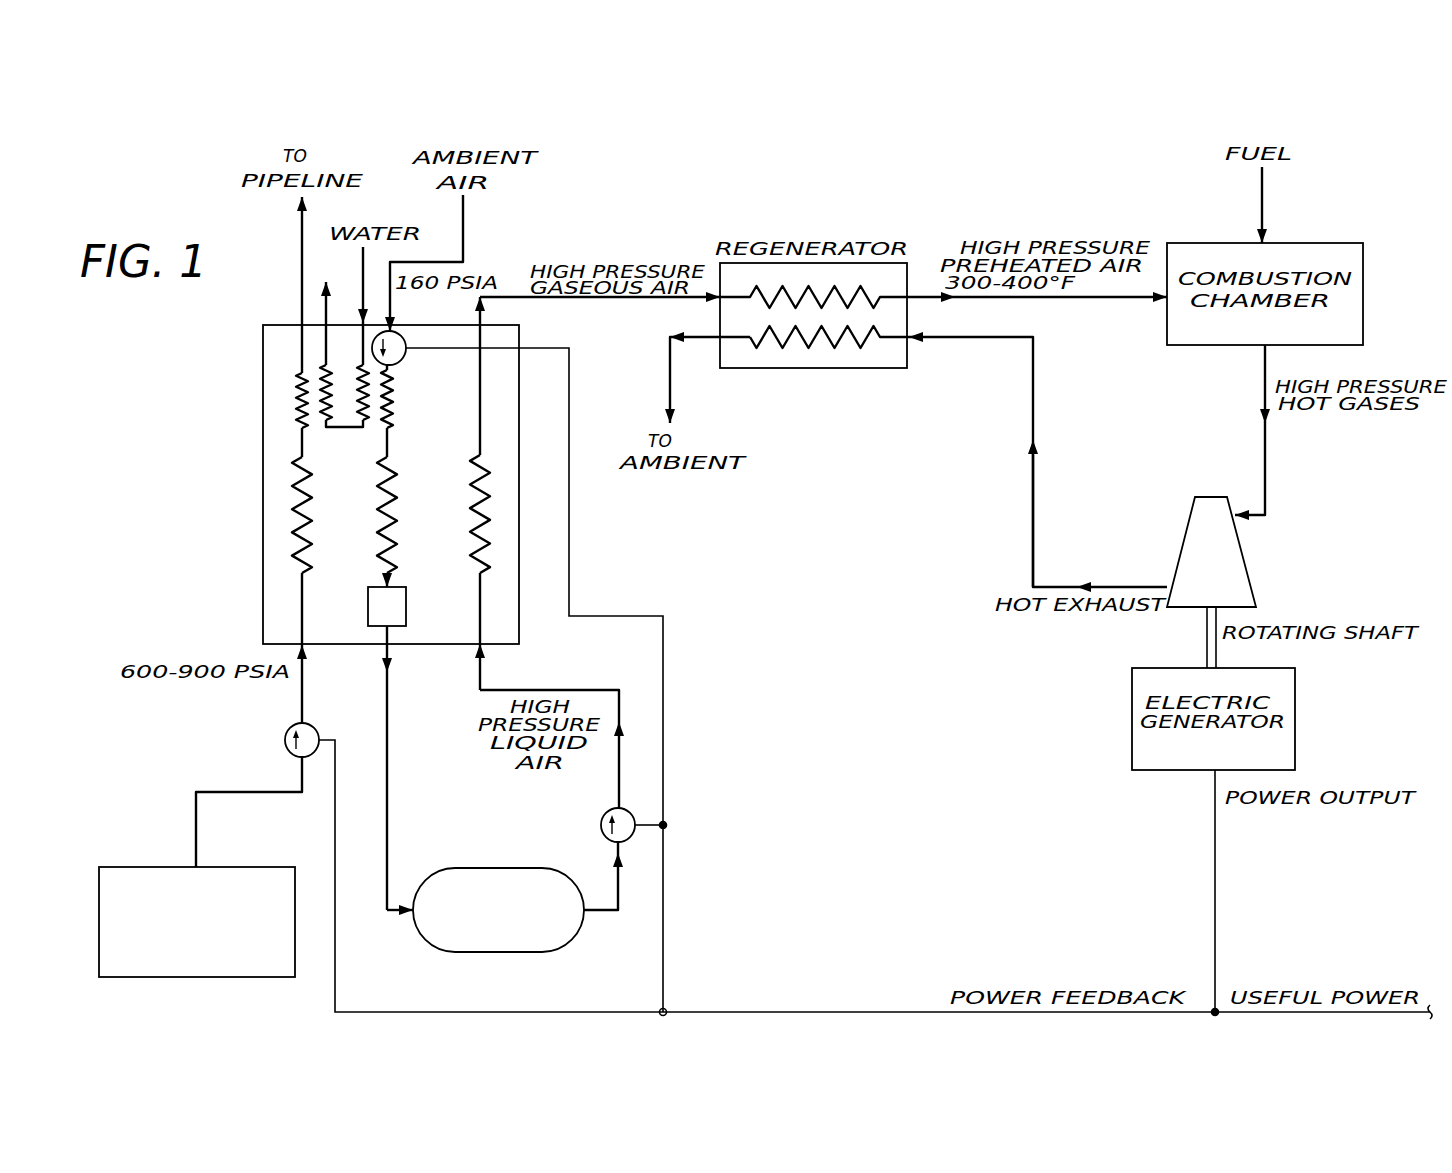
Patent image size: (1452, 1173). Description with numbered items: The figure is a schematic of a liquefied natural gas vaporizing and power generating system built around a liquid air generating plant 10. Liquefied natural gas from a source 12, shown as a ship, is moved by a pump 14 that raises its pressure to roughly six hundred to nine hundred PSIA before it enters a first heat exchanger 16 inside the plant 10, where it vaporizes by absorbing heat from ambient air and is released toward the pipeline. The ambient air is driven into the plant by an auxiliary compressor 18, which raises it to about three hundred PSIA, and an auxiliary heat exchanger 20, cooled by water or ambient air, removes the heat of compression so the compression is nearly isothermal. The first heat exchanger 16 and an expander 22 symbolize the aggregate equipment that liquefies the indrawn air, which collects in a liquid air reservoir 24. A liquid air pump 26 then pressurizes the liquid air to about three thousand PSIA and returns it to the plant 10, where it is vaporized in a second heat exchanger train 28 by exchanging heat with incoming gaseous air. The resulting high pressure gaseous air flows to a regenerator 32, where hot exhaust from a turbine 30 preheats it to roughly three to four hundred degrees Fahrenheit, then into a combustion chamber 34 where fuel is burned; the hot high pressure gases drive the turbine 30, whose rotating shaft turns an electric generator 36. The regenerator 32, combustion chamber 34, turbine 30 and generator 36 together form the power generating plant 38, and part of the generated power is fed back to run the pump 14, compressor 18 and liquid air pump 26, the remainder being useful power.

The liquid air generating plant 10 is at (256, 457).
The liquefied natural gas source 12 is at (230, 977).
The pump 14 is at (286, 738).
The first heat exchanger 16 is at (380, 505).
The auxiliary compressor 18 is at (400, 362).
The auxiliary heat exchanger 20 is at (380, 420).
The expander 22 is at (394, 607).
The liquid air reservoir 24 is at (496, 868).
The liquid air pump 26 is at (601, 830).
The second heat exchanger train 28 is at (470, 501).
The turbine 30 is at (1243, 585).
The regenerator 32 is at (810, 365).
The combustion chamber 34 is at (1365, 322).
The electric generator 36 is at (1297, 748).
The power generating plant 38 is at (927, 434).